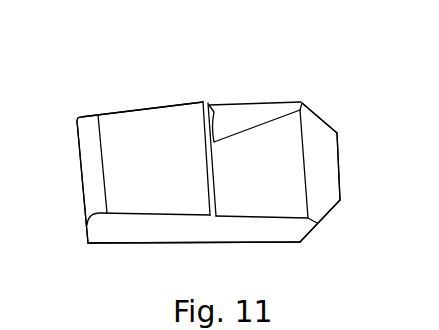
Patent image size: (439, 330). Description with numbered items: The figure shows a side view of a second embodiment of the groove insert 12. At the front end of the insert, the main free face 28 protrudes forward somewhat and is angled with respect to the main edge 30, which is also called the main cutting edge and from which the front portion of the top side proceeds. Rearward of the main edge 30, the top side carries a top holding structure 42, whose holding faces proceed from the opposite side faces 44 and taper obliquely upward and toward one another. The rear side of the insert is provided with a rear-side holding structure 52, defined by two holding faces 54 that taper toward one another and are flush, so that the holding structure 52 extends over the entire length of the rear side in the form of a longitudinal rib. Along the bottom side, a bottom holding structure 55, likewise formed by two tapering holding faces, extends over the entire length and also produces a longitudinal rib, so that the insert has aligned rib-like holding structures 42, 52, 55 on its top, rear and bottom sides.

The cutting insert 12 is at (162, 99).
The main free face 28 is at (80, 168).
The main edge 30 is at (73, 118).
The top holding structure 42 is at (247, 102).
The side faces 44 is at (152, 190).
The rear-side holding structure 52 is at (332, 165).
The holding faces 54 is at (325, 130).
The bottom holding structure 55 is at (297, 237).